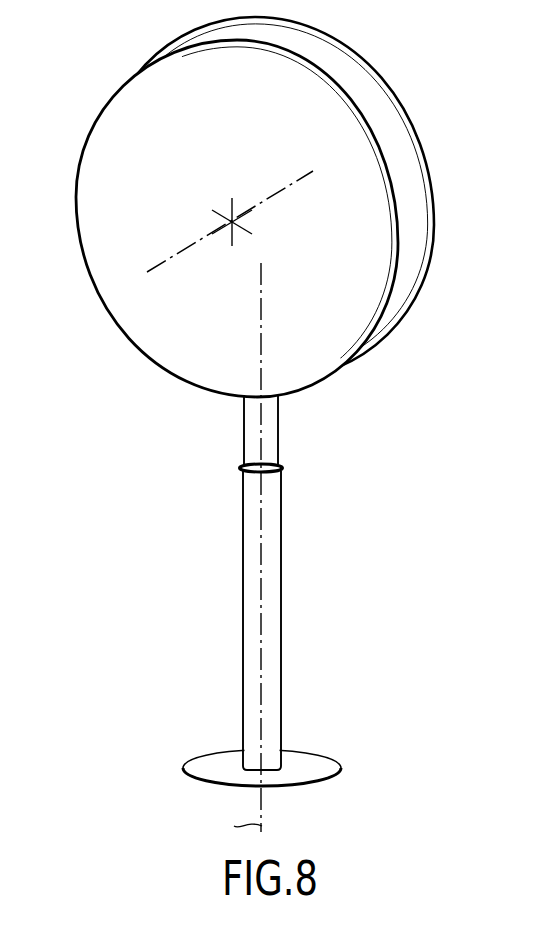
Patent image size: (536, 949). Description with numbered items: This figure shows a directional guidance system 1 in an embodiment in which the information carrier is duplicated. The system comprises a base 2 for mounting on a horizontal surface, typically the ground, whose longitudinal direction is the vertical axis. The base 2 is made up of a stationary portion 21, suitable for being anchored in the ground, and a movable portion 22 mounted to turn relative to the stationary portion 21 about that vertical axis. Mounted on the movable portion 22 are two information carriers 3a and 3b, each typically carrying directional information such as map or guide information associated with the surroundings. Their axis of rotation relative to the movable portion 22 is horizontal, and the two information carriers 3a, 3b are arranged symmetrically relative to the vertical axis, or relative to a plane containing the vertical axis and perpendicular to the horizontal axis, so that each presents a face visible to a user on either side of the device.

The directional guidance system 1 is at (251, 200).
The base 2 is at (270, 551).
The information carrier 3a is at (119, 102).
The information carrier 3b is at (383, 116).
The stationary portion 21 is at (244, 660).
The movable portion 22 is at (247, 437).